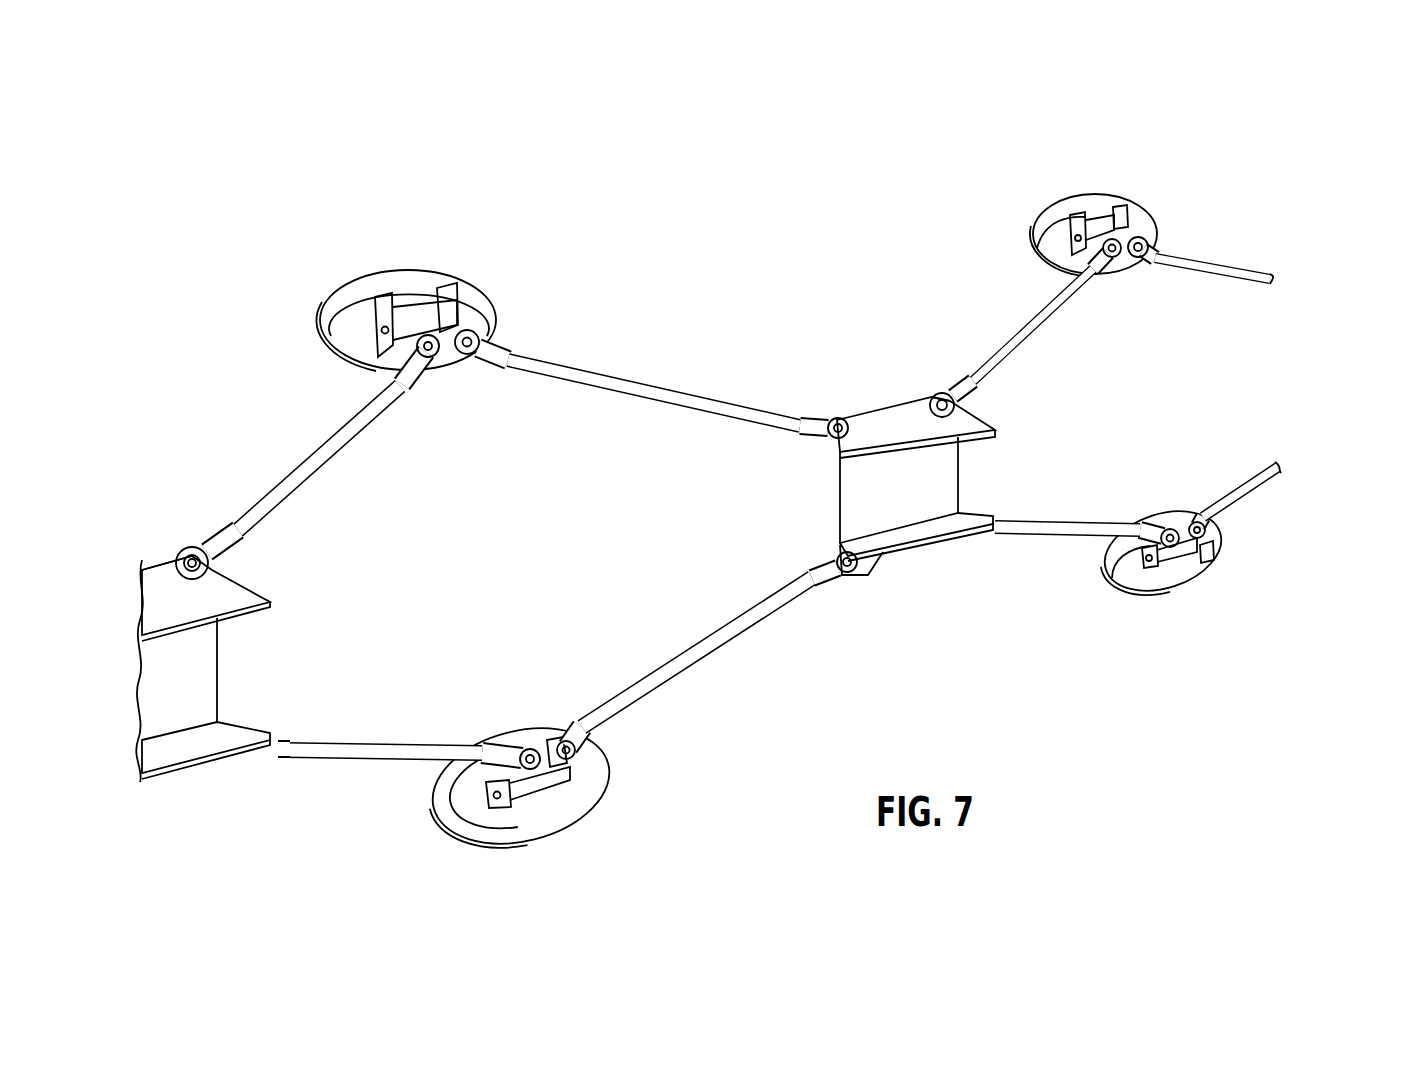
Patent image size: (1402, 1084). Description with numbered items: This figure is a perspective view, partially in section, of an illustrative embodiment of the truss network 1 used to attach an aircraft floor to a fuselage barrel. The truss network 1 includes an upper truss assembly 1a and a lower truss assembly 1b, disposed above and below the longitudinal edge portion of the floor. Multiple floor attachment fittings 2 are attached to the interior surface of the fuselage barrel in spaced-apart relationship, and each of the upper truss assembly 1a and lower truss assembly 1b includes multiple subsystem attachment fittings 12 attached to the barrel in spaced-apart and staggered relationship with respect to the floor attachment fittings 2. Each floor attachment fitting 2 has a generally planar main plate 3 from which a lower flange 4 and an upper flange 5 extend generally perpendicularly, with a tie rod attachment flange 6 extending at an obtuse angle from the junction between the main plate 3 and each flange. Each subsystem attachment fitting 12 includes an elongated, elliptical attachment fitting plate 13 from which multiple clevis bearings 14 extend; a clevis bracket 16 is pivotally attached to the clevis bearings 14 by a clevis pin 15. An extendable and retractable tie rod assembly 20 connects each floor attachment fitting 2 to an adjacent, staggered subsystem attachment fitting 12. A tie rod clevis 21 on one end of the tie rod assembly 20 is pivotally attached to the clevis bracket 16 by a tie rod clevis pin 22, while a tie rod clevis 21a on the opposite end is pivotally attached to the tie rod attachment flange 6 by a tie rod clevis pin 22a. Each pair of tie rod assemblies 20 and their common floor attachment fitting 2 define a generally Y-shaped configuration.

The truss network 1 is at (766, 516).
The upper truss assembly 1a is at (880, 255).
The lower truss assembly 1b is at (1092, 702).
The floor attachment fitting 2 is at (606, 583).
The main plate 3 is at (858, 495).
The lower flange 4 is at (180, 752).
The upper flange 5 is at (185, 615).
The tie rod attachment flange 6 is at (150, 576).
The subsystem attachment fitting 12 is at (770, 516).
The attachment fitting plate 13 is at (470, 300).
The clevis bearing 14 is at (405, 292).
The clevis pin 15 is at (345, 328).
The clevis bracket 16 is at (478, 318).
The tie rod assembly 20 is at (325, 448).
The tie rod clevis 21 is at (478, 370).
The tie rod clevis 21a is at (195, 548).
The tie rod clevis pin 22 is at (483, 337).
The tie rod clevis pin 22a is at (214, 552).